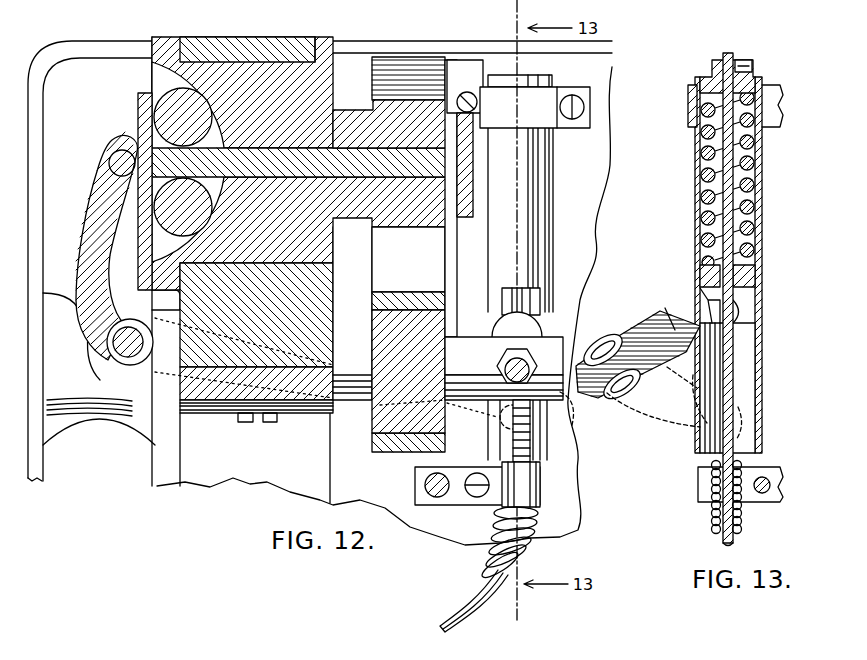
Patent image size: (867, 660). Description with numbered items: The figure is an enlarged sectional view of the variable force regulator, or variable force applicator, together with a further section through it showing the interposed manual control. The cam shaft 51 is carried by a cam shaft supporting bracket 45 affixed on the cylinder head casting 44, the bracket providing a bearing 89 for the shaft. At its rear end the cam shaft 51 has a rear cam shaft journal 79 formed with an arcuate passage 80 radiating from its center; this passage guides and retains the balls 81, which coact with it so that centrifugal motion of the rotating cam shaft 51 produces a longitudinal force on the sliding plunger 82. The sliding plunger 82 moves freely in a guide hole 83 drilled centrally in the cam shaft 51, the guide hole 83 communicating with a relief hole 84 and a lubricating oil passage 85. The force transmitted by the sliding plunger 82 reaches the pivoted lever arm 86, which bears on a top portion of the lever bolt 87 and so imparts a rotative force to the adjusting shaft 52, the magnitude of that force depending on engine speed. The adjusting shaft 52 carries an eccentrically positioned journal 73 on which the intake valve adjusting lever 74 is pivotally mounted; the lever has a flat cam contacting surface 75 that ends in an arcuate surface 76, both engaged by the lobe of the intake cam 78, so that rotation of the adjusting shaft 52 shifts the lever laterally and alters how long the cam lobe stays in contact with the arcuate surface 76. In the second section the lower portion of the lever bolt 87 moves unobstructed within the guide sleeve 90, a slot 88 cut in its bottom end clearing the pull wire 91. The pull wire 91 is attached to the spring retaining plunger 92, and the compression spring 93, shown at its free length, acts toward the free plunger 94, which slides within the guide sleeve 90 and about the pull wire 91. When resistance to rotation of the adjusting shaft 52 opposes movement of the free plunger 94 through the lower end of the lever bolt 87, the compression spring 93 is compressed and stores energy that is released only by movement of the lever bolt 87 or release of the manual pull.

In FIG. 12, the cylinder head casting 44 is at (320, 513).
In FIG. 12, the cam shaft supporting bracket 45 is at (207, 45).
In FIG. 12, the cam shaft 51 is at (347, 207).
In FIG. 12, the adjusting shaft 52 is at (467, 352).
In FIG. 12, the eccentrically positioned journal 73 is at (375, 413).
In FIG. 12, the intake valve adjusting lever 74 is at (423, 300).
In FIG. 12, the flat cam contacting surface 75 is at (423, 272).
In FIG. 12, the arcuate surface 76 is at (372, 72).
In FIG. 12, the intake cam 78 is at (372, 104).
In FIG. 12, the rear cam shaft journal 79 is at (267, 62).
In FIG. 12, the arcuate passage 80 is at (168, 78).
In FIG. 12, the ball 81 is at (173, 100).
In FIG. 12, the sliding plunger 82 is at (145, 140).
In FIG. 12, the guide hole 83 is at (448, 222).
In FIG. 12, the relief hole 84 is at (455, 113).
In FIG. 12, the lubricating oil passage 85 is at (285, 250).
In FIG. 12, the pivoted lever arm 86 is at (78, 375).
In FIG. 12, the lever bolt 87 is at (507, 327).
In FIG. 13, the lever bolt 87 is at (585, 420).
In FIG. 13, the slot 88 is at (705, 310).
In FIG. 12, the bearing 89 is at (315, 37).
In FIG. 12, the guide sleeve 90 is at (525, 232).
In FIG. 13, the guide sleeve 90 is at (743, 333).
In FIG. 12, the pull wire 91 is at (473, 600).
In FIG. 13, the pull wire 91 is at (728, 373).
In FIG. 13, the spring retaining plunger 92 is at (712, 63).
In FIG. 13, the compression spring 93 is at (717, 157).
In FIG. 13, the free plunger 94 is at (697, 275).